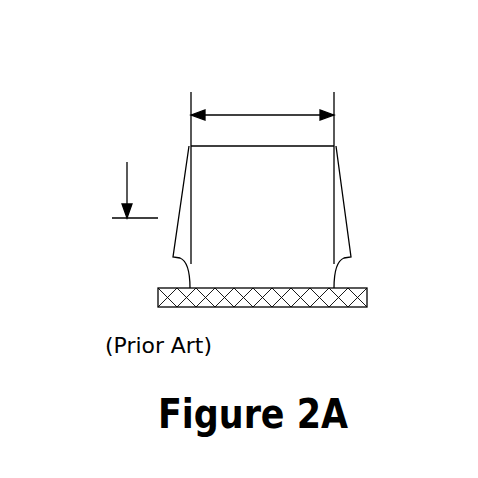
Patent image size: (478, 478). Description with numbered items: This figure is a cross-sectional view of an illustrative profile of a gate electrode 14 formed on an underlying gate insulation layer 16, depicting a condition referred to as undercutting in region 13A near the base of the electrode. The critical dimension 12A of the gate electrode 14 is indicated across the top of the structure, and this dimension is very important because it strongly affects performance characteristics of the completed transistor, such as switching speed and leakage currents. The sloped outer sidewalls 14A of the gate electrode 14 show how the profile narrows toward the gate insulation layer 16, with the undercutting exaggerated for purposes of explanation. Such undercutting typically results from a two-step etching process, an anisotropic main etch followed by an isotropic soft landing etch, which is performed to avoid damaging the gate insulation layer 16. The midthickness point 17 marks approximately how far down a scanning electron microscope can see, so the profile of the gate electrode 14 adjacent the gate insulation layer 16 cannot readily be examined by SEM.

The critical dimension 12A is at (255, 115).
The undercutting region 13A is at (157, 272).
The gate electrode 14 is at (302, 202).
The die sidewall 14A is at (347, 227).
The gate insulation layer 16 is at (348, 297).
The midthickness point 17 is at (127, 178).